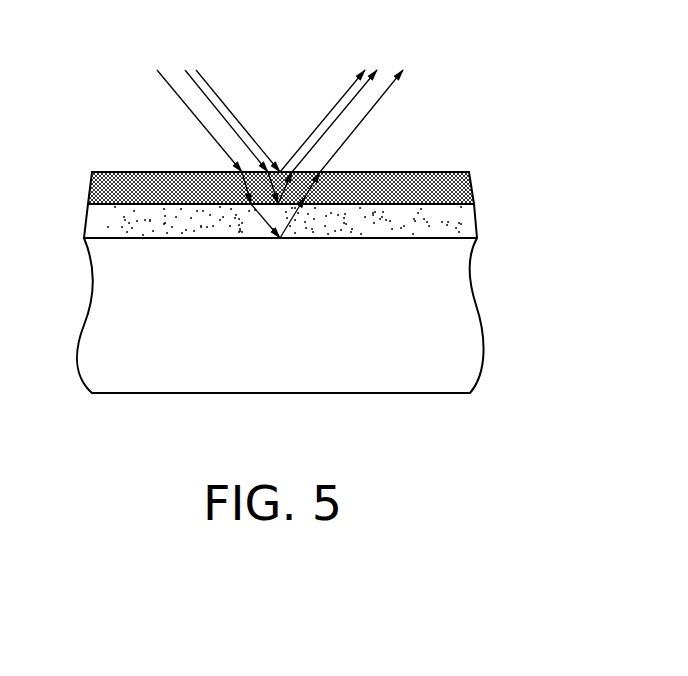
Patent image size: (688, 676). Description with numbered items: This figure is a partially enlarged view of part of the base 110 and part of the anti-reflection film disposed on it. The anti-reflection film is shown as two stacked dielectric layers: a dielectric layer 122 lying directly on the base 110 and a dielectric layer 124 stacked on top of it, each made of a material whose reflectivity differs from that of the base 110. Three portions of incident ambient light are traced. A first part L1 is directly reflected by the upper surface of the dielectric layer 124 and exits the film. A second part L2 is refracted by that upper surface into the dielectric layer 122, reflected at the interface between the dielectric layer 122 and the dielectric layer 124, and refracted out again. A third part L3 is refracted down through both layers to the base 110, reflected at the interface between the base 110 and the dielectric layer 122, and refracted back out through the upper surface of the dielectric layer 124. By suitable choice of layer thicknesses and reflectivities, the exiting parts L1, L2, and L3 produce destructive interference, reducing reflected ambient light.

The base 110 is at (450, 325).
The dielectric layer 122 is at (452, 220).
The dielectric layer 124 is at (452, 188).
The first part of the ambient light L1 is at (349, 90).
The second part of the ambient light L2 is at (356, 98).
The third part of the ambient light L3 is at (383, 95).